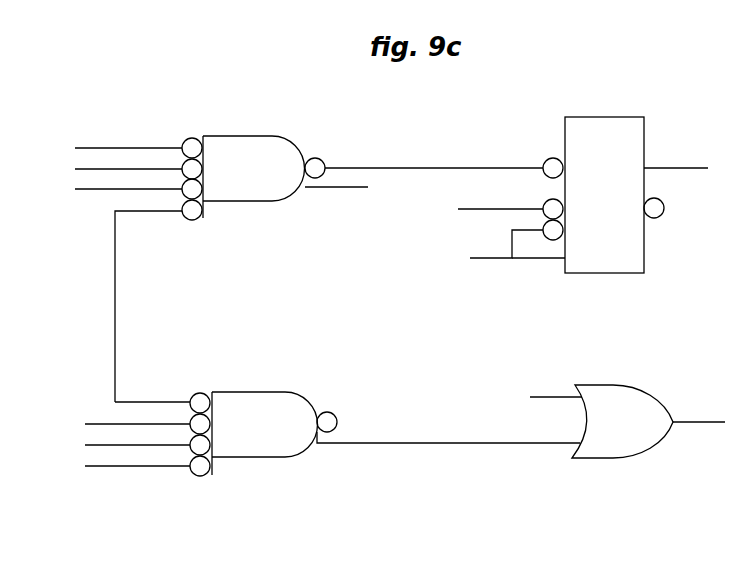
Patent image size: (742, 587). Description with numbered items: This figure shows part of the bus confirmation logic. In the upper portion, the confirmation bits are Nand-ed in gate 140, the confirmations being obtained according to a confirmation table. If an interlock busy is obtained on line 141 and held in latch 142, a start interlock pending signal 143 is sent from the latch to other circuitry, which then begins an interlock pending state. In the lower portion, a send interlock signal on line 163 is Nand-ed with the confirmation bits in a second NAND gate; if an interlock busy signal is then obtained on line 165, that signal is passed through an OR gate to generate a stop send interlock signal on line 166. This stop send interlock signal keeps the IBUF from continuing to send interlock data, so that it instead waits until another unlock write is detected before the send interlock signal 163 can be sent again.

The gate 140 is at (247, 148).
The line 141 is at (460, 168).
The latch 142 is at (633, 142).
The start interlock pending signal 143 is at (667, 170).
The send interlock signal 163 is at (103, 422).
The line 165 is at (397, 442).
The line 166 is at (685, 422).